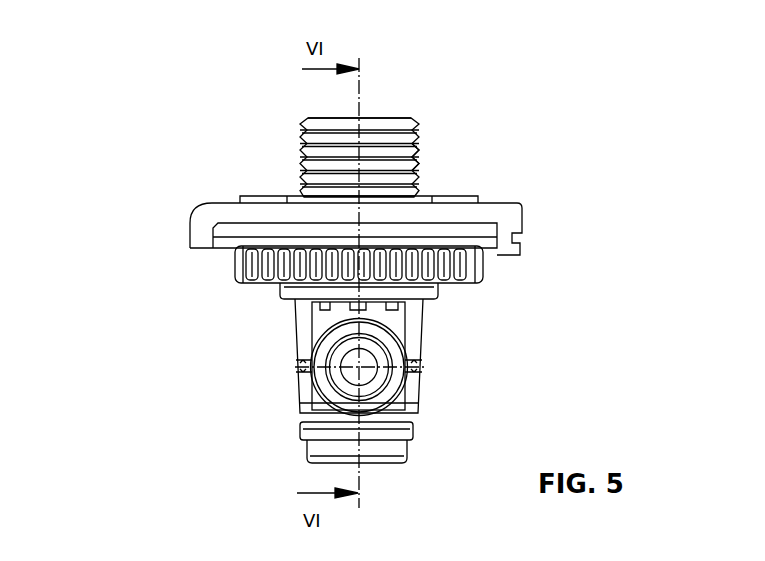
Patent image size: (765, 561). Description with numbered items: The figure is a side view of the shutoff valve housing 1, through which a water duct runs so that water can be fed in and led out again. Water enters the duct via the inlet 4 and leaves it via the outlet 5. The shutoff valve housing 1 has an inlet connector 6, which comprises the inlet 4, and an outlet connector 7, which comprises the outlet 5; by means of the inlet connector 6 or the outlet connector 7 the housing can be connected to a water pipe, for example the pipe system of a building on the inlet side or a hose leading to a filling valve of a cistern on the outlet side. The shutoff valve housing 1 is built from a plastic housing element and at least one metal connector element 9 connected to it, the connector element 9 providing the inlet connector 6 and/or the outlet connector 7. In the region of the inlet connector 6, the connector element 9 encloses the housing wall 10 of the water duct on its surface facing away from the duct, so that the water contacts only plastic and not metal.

The shutoff valve housing 1 is at (422, 322).
The inlet 4 is at (383, 116).
The outlet 5 is at (385, 388).
The inlet connector 6 is at (417, 162).
The outlet connector 7 is at (315, 380).
The connector element 9 is at (308, 152).
The housing wall 10 is at (412, 382).